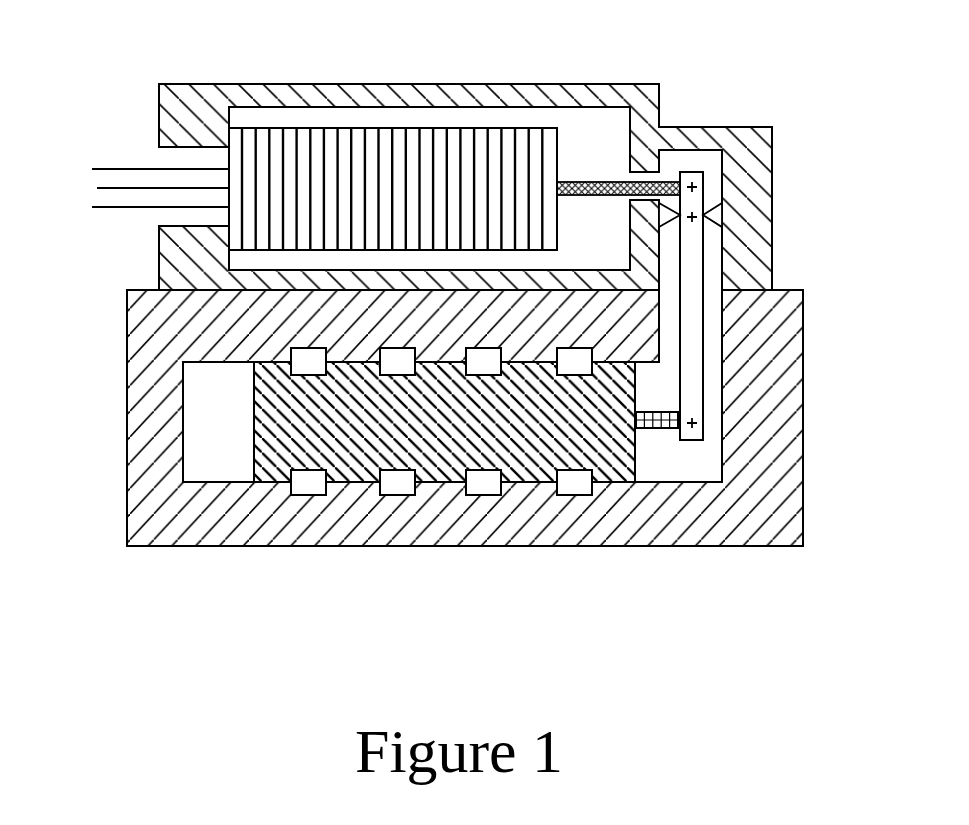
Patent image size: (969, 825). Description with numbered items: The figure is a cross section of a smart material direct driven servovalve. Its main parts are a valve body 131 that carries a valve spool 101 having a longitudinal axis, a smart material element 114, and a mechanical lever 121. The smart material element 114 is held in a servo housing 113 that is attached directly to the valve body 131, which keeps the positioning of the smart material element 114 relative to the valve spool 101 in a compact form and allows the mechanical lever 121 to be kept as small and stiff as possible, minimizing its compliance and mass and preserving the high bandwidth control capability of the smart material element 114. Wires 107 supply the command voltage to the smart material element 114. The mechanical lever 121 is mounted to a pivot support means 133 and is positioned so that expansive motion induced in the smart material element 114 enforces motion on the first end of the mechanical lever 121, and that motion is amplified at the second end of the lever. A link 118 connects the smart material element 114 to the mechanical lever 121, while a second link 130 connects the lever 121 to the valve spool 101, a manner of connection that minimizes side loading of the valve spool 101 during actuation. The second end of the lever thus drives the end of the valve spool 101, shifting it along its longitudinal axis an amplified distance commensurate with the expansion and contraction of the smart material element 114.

The valve spool 101 is at (321, 457).
The wires 107 is at (128, 199).
The servo housing 113 is at (443, 98).
The smart material element 114 is at (302, 153).
The link 118 is at (670, 178).
The mechanical lever 121 is at (693, 295).
The second link 130 is at (657, 428).
The valve body 131 is at (537, 518).
The pivot support means 133 is at (716, 203).